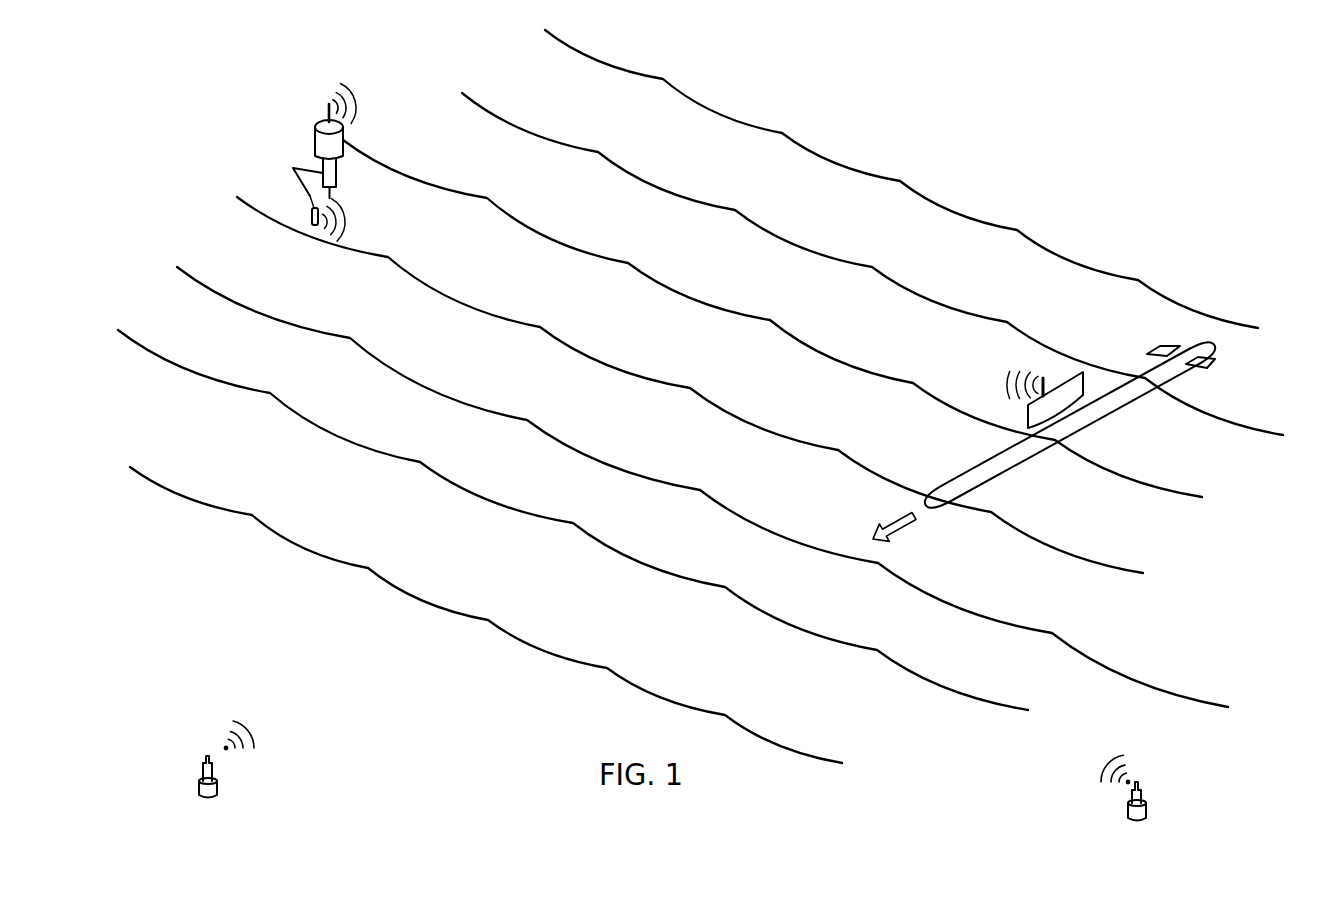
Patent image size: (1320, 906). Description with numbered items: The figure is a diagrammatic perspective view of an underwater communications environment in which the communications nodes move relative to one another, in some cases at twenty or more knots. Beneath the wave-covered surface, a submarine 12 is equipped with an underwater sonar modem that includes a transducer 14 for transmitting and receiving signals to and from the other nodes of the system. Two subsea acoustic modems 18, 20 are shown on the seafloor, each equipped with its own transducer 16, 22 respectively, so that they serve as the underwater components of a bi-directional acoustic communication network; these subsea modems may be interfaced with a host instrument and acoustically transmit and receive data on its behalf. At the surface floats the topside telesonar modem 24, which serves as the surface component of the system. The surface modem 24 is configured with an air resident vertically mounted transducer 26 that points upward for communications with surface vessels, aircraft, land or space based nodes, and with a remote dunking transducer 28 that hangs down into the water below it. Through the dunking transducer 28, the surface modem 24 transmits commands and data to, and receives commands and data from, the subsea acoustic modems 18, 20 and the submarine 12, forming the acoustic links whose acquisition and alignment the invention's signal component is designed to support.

The submarine 12 is at (1085, 340).
The transducer 14 is at (1031, 389).
The transducer 16 is at (202, 772).
The subsea acoustic modem 18 is at (231, 780).
The subsea acoustic modem 20 is at (1162, 800).
The transducer 22 is at (1143, 797).
The topside telesonar modem 24 is at (304, 132).
The air resident vertically mounted transducer 26 is at (327, 117).
The remote dunking transducer 28 is at (309, 213).